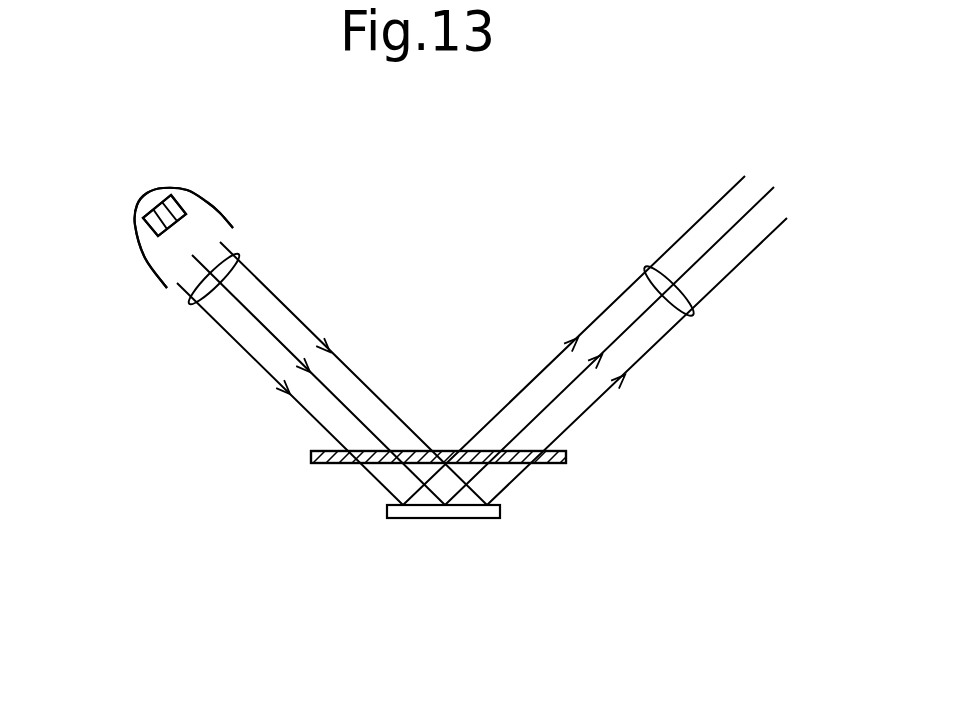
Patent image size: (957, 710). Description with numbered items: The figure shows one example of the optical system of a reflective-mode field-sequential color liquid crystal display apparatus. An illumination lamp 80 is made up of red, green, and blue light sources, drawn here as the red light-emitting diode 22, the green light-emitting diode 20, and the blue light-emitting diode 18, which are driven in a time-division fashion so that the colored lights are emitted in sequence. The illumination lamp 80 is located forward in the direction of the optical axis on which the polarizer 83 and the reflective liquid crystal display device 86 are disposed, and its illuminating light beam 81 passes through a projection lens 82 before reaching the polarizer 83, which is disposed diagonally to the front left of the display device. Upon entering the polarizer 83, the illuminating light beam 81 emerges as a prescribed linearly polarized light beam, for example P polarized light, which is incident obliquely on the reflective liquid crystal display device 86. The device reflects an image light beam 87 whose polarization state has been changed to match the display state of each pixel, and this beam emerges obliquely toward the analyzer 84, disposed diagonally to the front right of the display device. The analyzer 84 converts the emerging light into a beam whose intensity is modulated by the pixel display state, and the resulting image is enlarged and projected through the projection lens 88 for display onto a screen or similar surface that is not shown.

The blue light-emitting diode 18 is at (165, 190).
The green light-emitting diode 20 is at (148, 197).
The red light-emitting diode 22 is at (134, 207).
The illumination lamp 80 is at (200, 197).
The illuminating light beam 81 is at (295, 312).
The projection lens 82 is at (240, 250).
The polarizer 83 is at (310, 457).
The analyzer 84 is at (567, 462).
The reflective liquid crystal display device 86 is at (445, 520).
The image light beam 87 is at (607, 397).
The projection lens 88 is at (647, 267).